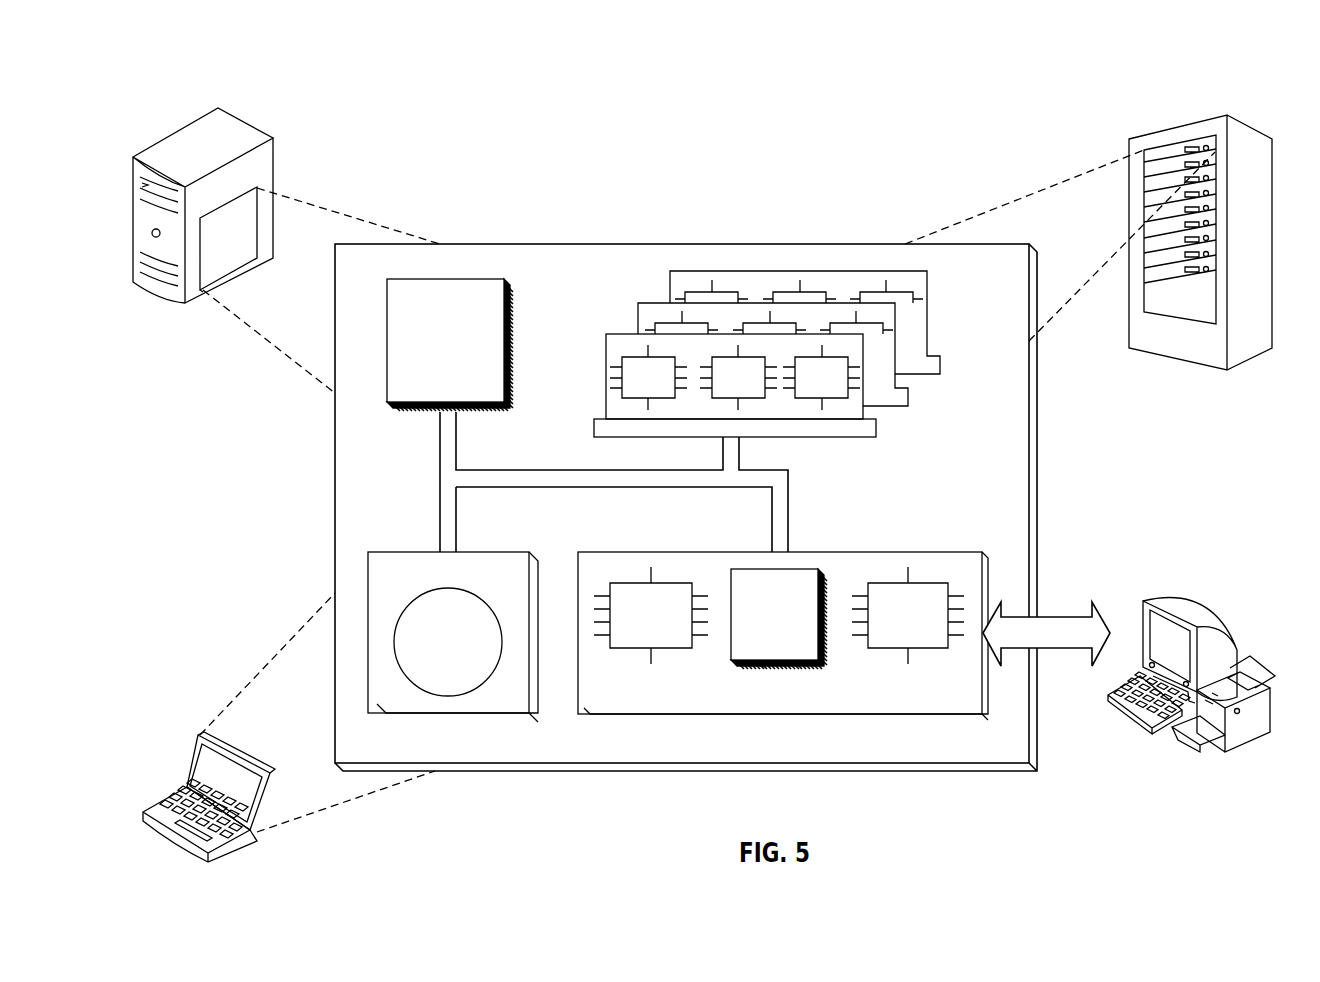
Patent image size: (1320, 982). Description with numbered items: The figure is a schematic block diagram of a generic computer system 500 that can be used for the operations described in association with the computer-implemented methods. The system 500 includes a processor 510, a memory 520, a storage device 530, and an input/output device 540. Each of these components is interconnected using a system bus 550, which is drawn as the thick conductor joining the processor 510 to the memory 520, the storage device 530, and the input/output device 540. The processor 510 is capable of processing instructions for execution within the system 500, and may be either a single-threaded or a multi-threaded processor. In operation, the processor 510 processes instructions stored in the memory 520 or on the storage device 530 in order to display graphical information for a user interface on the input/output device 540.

The computer system 500 is at (218, 88).
The processor 510 is at (447, 279).
The memory 520 is at (918, 394).
The storage device 530 is at (428, 552).
The input/output device 540 is at (1155, 600).
The system bus 550 is at (609, 488).